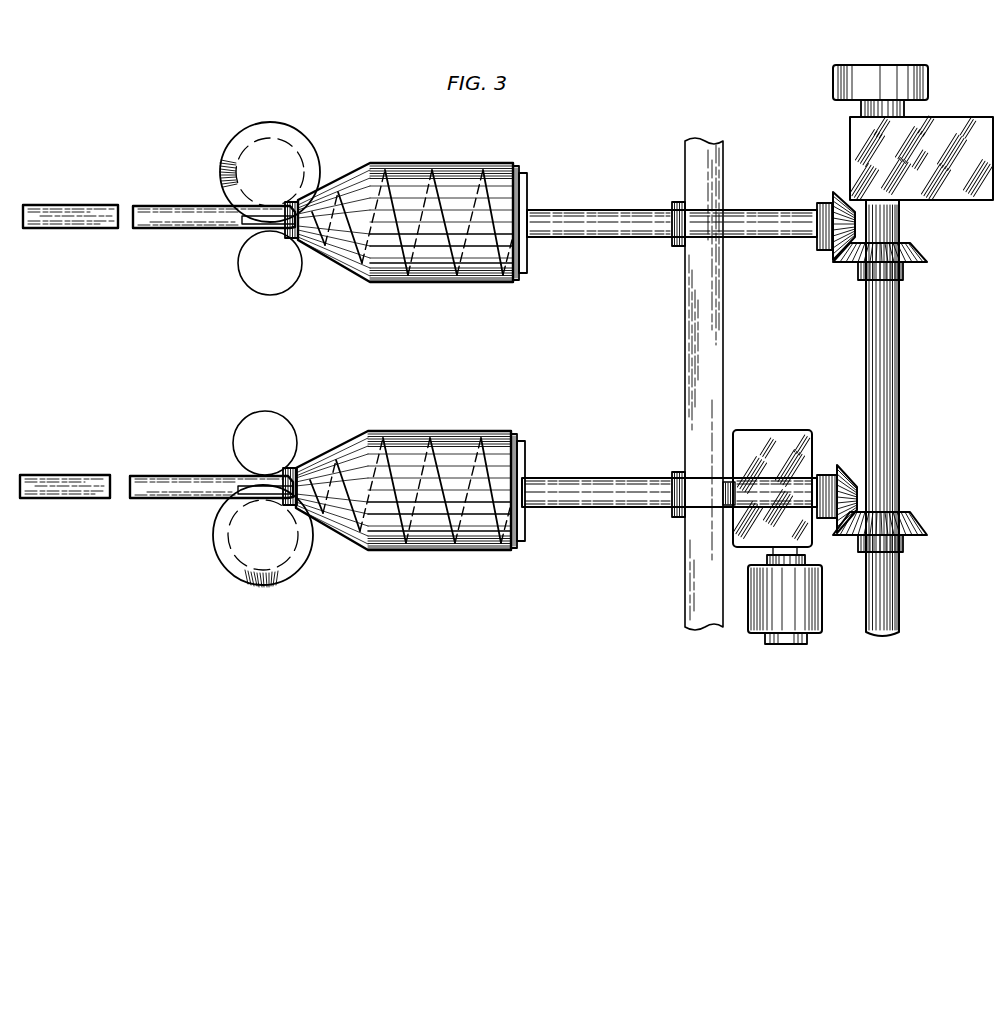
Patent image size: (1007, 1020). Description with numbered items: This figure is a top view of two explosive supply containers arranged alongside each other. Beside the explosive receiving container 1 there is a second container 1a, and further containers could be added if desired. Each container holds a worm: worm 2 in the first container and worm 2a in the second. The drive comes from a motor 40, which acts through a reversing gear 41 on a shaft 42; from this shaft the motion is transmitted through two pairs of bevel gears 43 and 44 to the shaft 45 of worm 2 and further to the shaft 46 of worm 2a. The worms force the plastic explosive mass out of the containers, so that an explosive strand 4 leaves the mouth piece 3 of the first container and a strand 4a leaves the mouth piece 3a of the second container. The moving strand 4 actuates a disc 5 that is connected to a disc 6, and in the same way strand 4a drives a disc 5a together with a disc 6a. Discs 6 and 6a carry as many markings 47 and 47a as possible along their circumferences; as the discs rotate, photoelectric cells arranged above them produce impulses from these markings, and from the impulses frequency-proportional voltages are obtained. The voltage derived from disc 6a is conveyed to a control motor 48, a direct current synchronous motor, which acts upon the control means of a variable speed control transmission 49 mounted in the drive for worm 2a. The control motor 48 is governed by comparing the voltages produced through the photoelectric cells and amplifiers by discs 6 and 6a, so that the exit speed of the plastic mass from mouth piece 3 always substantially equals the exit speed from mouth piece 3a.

The explosive receiving container 1 is at (477, 168).
The worm 2 is at (493, 210).
The mouth piece 3 is at (297, 240).
The explosive strand 4 is at (150, 213).
The disc 5 is at (297, 150).
The disc 6 is at (275, 122).
The markings 47 is at (222, 170).
The shaft 45 is at (610, 215).
The motor 40 is at (833, 88).
The reversing gear 41 is at (850, 148).
The shaft 42 is at (885, 348).
The pair of bevel gears 43 is at (855, 265).
The pair of bevel gears 44 is at (905, 522).
The shaft 46 is at (625, 480).
The control motor 48 is at (805, 625).
The variable speed control transmission 49 is at (760, 440).
The second container 1a is at (455, 432).
The worm 2a is at (490, 470).
The mouth piece 3a is at (295, 470).
The strand 4a is at (150, 480).
The disc 5a is at (232, 545).
The disc 6a is at (240, 570).
The markings 47a is at (275, 580).